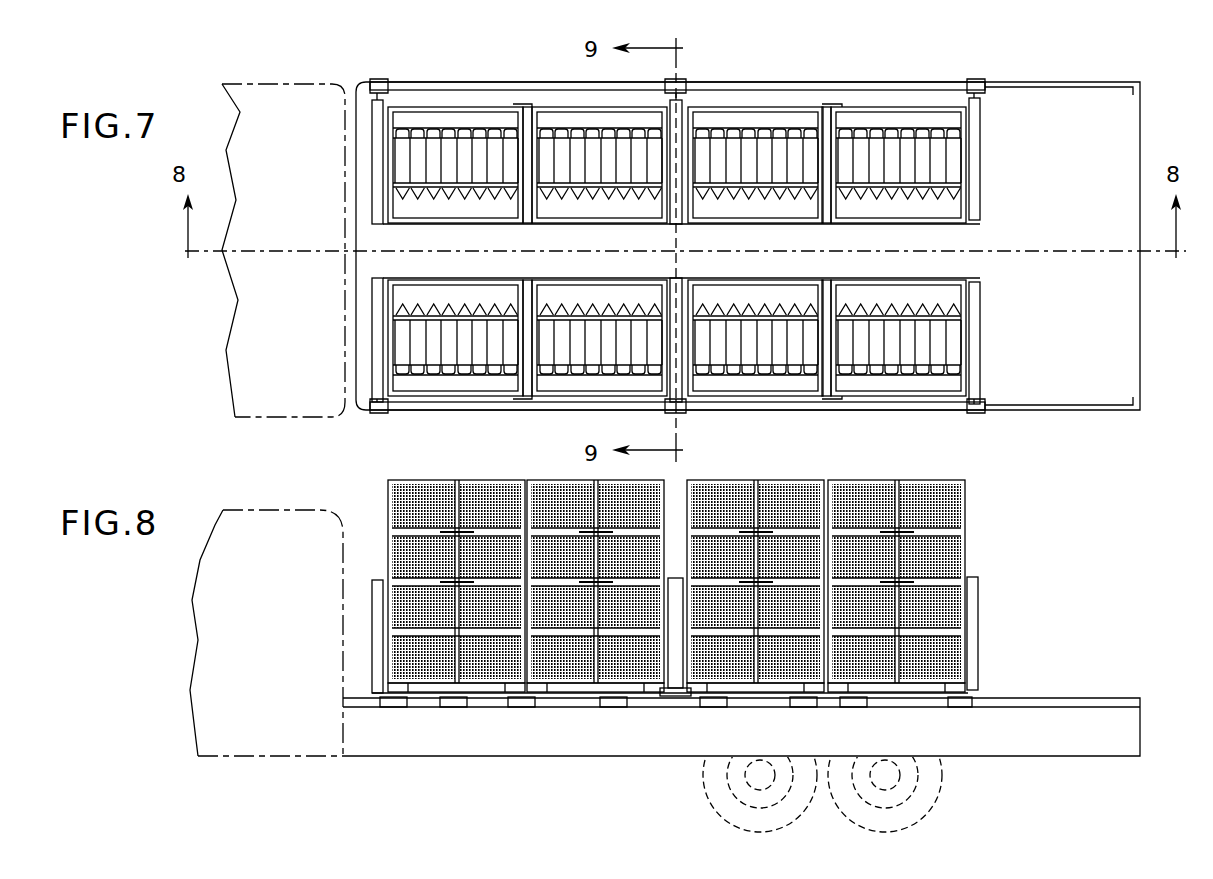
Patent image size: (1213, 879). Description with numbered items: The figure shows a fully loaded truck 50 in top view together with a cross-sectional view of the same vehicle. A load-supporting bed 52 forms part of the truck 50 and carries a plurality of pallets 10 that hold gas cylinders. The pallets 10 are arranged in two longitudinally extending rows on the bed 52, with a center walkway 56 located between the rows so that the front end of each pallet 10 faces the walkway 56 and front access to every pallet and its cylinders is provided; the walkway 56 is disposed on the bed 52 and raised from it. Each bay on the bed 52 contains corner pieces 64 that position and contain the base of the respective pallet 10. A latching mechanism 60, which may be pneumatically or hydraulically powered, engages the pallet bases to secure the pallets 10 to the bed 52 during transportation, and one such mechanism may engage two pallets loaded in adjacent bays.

In FIG. 7, the pallet 10 is at (935, 107).
In FIG. 8, the pallet 10 is at (935, 480).
In FIG. 7, the truck 50 is at (240, 81).
In FIG. 8, the truck 50 is at (230, 497).
In FIG. 7, the load-supporting bed 52 is at (1078, 385).
In FIG. 8, the load-supporting bed 52 is at (1082, 698).
In FIG. 7, the center walkway 56 is at (960, 233).
In FIG. 8, the center walkway 56 is at (975, 678).
In FIG. 8, the latching mechanism 60 is at (668, 704).
In FIG. 8, the corner pieces 64 is at (958, 708).